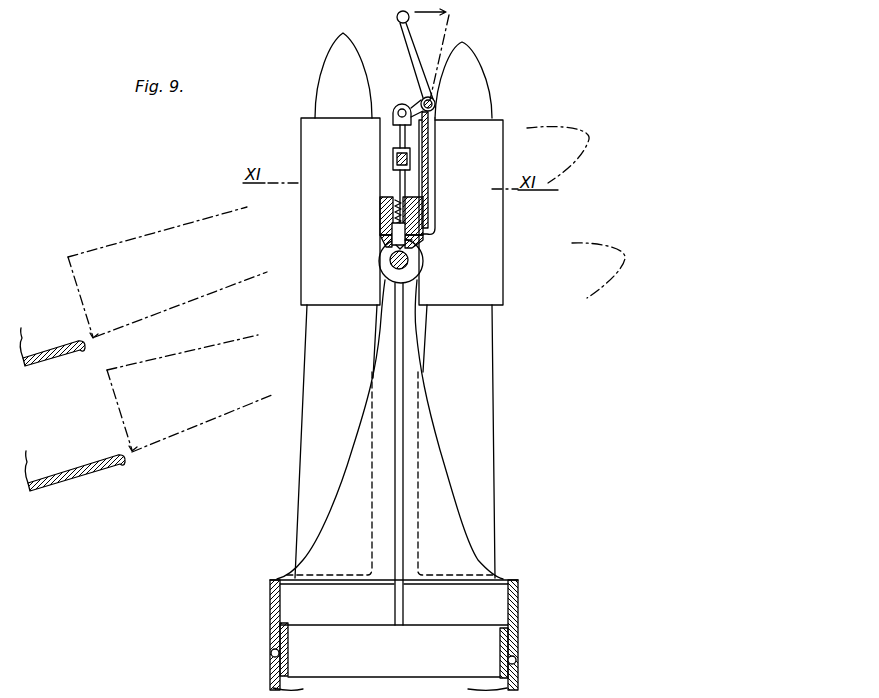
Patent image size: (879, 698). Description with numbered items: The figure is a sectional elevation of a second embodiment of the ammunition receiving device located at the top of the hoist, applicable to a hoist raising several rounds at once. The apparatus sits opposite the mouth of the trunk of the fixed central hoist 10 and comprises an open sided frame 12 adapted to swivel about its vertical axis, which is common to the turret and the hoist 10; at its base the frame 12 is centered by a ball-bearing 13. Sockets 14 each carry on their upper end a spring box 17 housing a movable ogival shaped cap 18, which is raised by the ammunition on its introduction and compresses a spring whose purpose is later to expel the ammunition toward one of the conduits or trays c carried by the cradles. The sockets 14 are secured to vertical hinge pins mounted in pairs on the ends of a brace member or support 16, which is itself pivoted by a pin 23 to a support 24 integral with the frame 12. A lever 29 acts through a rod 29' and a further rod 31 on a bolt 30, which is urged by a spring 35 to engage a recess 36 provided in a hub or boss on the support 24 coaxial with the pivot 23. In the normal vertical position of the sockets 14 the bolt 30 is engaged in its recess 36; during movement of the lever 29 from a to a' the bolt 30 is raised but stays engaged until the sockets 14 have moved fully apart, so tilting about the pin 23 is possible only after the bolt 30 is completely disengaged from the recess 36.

The central hoist 10 is at (520, 672).
The open sided frame 12 is at (435, 477).
The ball-bearing 13 is at (272, 655).
The sockets 14 is at (487, 413).
The brace member or support 16 is at (433, 215).
The spring box 17 is at (518, 148).
The ogival shaped cap 18 is at (320, 92).
The pin 23 is at (392, 267).
The support 24 is at (422, 260).
The lever 29 is at (409, 61).
The rod 29' is at (386, 161).
The bolt 30 is at (398, 227).
The rod 31 is at (403, 188).
The spring 35 is at (385, 210).
The recess 36 is at (412, 245).
The lever position a is at (384, 27).
The lever position a' is at (449, 54).
The conduits or trays c is at (60, 352).